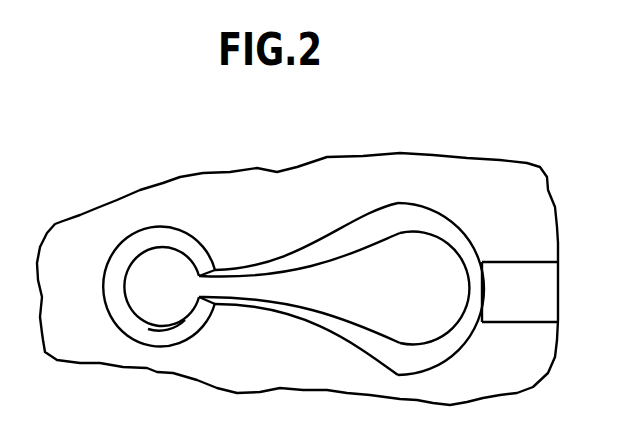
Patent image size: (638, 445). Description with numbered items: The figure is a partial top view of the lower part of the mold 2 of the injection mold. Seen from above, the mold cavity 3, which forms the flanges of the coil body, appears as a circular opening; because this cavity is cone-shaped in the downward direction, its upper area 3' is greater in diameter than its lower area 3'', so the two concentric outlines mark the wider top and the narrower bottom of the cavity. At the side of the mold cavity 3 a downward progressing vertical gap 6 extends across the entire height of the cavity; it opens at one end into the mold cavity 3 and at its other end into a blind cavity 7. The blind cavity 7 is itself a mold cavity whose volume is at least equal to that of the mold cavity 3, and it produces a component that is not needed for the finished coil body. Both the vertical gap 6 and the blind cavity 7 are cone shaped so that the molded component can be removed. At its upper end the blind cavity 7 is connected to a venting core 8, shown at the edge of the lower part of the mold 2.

The lower part of the mold 2 is at (278, 234).
The mold cavity 3 is at (149, 324).
The upper area 3' is at (146, 265).
The lower area 3'' is at (166, 376).
The vertical gap 6 is at (248, 290).
The blind cavity 7 is at (425, 262).
The venting core 8 is at (537, 283).